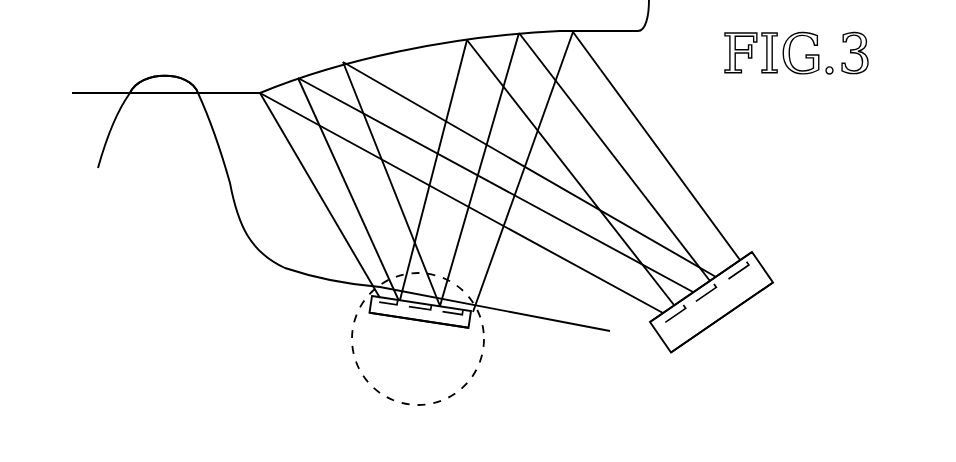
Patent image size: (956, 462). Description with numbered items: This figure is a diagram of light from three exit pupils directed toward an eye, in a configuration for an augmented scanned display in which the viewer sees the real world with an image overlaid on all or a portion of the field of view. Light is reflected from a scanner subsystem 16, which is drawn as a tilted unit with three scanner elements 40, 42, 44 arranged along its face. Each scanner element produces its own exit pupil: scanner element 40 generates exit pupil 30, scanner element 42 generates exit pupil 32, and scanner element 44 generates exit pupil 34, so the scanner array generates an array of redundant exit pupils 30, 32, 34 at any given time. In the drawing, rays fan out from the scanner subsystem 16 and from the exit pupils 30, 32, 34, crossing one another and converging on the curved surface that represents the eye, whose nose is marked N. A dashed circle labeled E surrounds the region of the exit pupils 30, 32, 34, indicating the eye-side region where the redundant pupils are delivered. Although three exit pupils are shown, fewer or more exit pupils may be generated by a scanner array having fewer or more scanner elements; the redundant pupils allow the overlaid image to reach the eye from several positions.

The nipple / skin surface feature N is at (167, 77).
The enlarged region E is at (427, 405).
The scanner subsystem 16 is at (770, 268).
The exit pupil 30 is at (382, 313).
The exit pupil 32 is at (415, 306).
The exit pupil 34 is at (467, 328).
The scanner element 40 is at (680, 320).
The scanner element 42 is at (713, 297).
The scanner element 44 is at (765, 286).